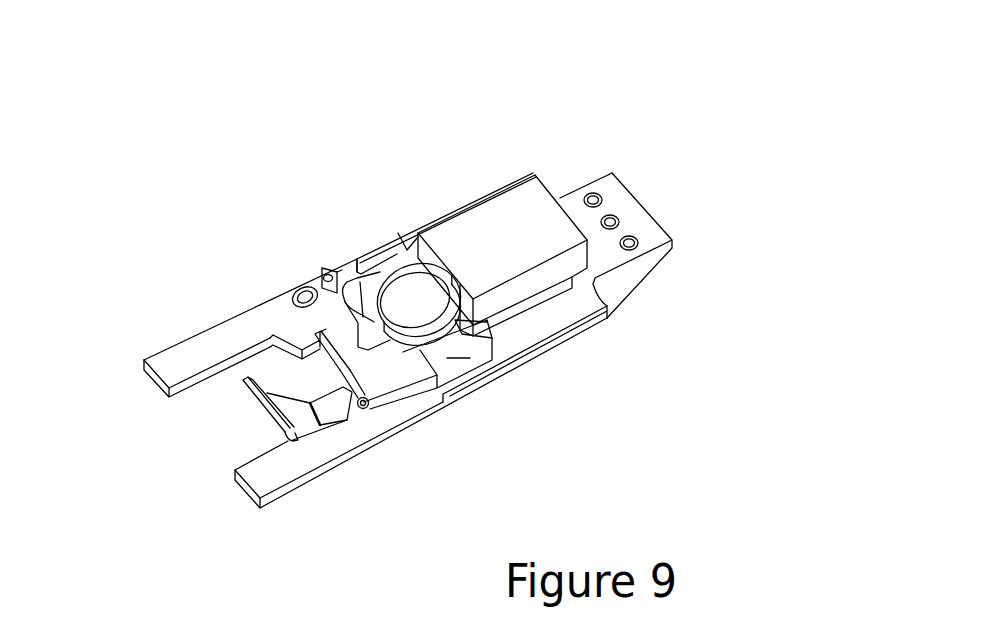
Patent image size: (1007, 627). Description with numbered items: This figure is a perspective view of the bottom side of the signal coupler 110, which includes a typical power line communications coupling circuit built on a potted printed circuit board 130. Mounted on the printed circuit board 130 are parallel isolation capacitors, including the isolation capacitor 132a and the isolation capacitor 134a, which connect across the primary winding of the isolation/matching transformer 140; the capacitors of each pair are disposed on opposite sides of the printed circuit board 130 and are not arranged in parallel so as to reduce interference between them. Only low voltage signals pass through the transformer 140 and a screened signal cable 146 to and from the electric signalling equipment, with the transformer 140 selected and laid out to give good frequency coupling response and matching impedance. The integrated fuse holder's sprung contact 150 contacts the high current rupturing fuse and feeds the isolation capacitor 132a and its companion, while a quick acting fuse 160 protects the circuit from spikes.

The signal coupler 110 is at (523, 142).
The printed circuit board 130 is at (172, 357).
The isolation capacitor 132a is at (393, 290).
The isolation capacitor 134a is at (472, 355).
The isolation/matching transformer 140 is at (503, 222).
The screened signal cable 146 is at (613, 212).
The sprung contact 150 is at (253, 408).
The fuse 160 is at (388, 262).